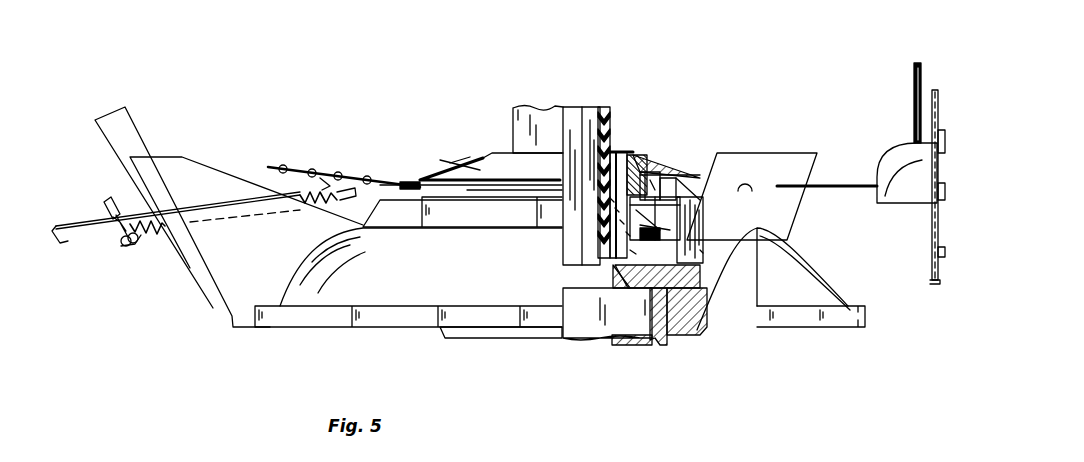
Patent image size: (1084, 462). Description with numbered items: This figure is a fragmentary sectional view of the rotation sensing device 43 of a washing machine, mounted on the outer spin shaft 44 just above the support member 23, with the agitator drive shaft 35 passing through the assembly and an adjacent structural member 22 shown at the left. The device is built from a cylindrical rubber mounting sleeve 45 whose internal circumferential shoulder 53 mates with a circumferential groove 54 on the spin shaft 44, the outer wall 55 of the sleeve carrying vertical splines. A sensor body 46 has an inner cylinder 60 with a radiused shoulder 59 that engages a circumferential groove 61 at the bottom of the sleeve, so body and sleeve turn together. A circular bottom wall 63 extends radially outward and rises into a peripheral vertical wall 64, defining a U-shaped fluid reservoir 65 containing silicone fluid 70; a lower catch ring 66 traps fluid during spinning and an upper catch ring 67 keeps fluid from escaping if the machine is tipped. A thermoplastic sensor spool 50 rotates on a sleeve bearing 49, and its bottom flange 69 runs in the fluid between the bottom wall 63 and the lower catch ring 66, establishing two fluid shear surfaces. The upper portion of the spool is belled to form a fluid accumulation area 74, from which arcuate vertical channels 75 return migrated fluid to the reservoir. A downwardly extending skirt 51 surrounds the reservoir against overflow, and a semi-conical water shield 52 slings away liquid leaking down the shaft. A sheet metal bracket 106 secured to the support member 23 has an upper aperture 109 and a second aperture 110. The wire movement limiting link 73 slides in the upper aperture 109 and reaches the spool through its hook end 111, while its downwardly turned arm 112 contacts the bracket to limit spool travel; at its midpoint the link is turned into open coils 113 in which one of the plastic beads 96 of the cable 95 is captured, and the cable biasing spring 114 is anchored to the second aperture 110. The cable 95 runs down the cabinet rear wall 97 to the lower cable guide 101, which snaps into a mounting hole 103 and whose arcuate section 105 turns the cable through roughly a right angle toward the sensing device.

The arm 22 is at (130, 124).
The support member 23 is at (262, 328).
The drive shaft 35 is at (587, 124).
The rotation sensing device 43 is at (460, 128).
The spin shaft 44 is at (610, 158).
The mounting sleeve 45 is at (622, 160).
The sensor body 46 is at (650, 178).
The bearing 49 is at (660, 187).
The sensor spool 50 is at (684, 198).
The skirt 51 is at (503, 221).
The water shield 52 is at (447, 180).
The internal circumferential shoulder 53 is at (628, 240).
The circumferential groove 54 is at (633, 252).
The outer wall 55 is at (636, 165).
The radiused shoulder 59 is at (617, 238).
The inner cylinder 60 is at (622, 222).
The circumferential groove 61 is at (628, 234).
The bottom wall 63 is at (702, 256).
The peripheral vertical wall 64 is at (695, 240).
The fluid reservoir 65 is at (655, 222).
The lower catch ring 66 is at (665, 228).
The upper catch ring 67 is at (715, 198).
The flange 69 is at (672, 275).
The silicone fluid 70 is at (647, 262).
The movement limiting link 73 is at (223, 198).
The fluid accumulation area 74 is at (672, 192).
The arcuate vertical channels 75 is at (617, 210).
The cable 95 is at (913, 70).
The plastic beads 96 is at (310, 176).
The rear wall 97 is at (936, 281).
The lower cable guide 101 is at (930, 218).
The mounting hole 103 is at (944, 257).
The arcuate section 105 is at (877, 198).
The sheet metal bracket 106 is at (112, 196).
The upper aperture 109 is at (112, 228).
The second aperture 110 is at (142, 250).
The hook end 111 is at (612, 200).
The downwardly turned arm 112 is at (56, 245).
The open coils 113 is at (345, 193).
The cable biasing spring 114 is at (160, 238).